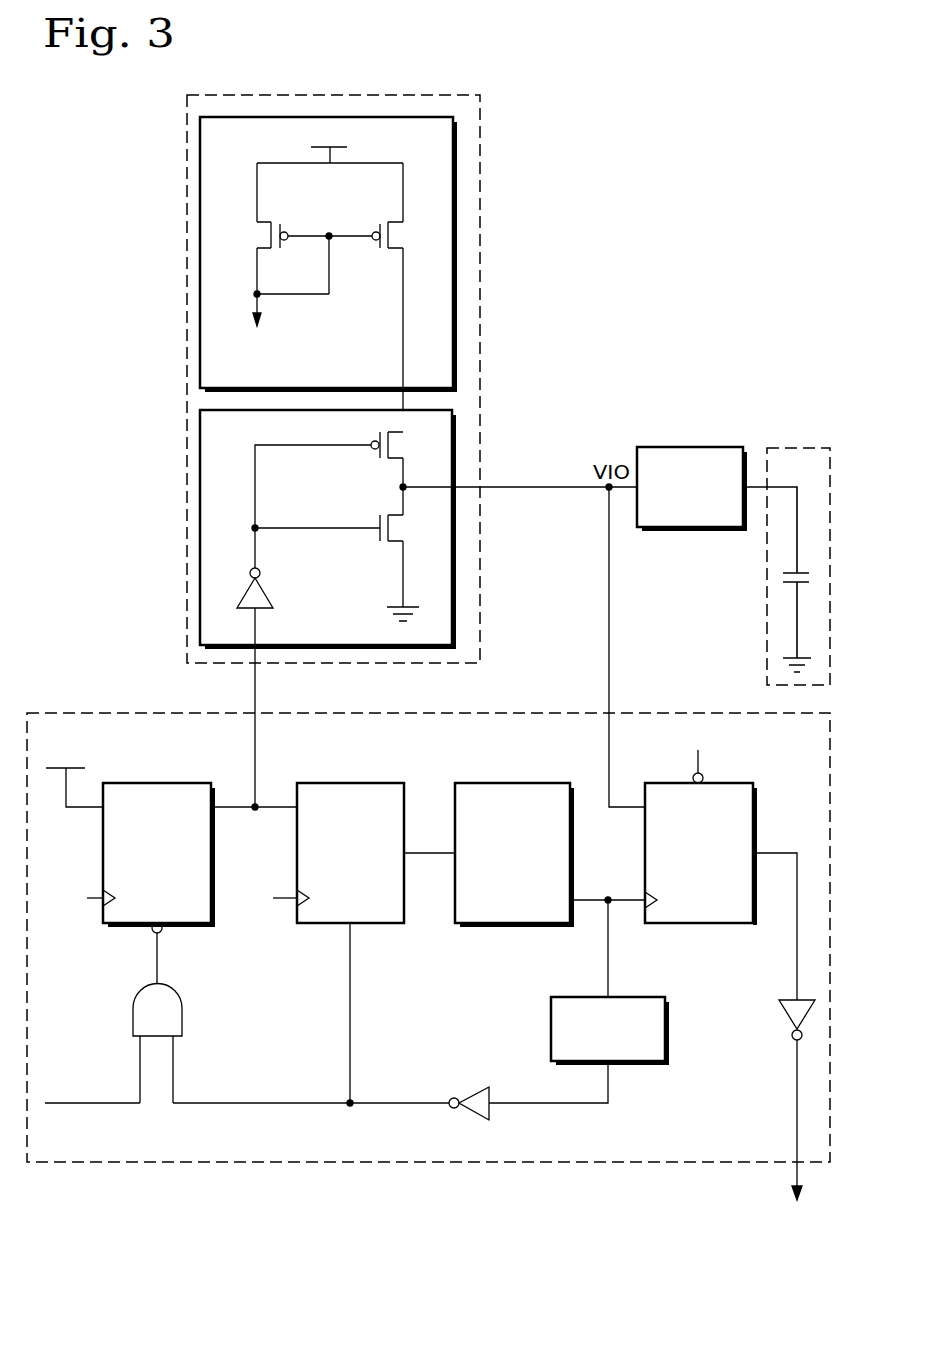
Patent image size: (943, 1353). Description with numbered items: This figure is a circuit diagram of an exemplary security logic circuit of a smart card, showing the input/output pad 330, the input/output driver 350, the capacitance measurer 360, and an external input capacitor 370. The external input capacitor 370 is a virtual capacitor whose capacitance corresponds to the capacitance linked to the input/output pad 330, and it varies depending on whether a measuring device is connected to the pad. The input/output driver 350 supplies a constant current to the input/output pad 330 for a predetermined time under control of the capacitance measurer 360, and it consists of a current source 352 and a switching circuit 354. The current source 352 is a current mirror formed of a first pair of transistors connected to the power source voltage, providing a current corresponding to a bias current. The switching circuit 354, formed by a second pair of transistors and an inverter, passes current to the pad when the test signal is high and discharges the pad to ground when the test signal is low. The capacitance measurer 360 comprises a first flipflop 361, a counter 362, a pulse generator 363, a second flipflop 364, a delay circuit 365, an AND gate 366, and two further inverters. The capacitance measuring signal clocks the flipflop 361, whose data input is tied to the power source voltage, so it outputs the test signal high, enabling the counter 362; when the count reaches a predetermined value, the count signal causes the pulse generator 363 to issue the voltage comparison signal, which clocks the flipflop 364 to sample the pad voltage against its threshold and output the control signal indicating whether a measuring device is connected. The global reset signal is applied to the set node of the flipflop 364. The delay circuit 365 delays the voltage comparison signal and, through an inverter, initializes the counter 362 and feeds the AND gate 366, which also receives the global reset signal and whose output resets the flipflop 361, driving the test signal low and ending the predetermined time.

The input/output pad 330 is at (707, 447).
The input/output driver 350 is at (480, 262).
The current source 352 is at (200, 262).
The switching circuit 354 is at (200, 524).
The capacitance measurer 360 is at (693, 713).
The flipflop 361 is at (173, 783).
The counter 362 is at (367, 783).
The pulse generator 363 is at (533, 783).
The flipflop 364 is at (745, 783).
The delay circuit 365 is at (640, 997).
The AND gate 366 is at (182, 1012).
The external input capacitor 370 is at (800, 448).